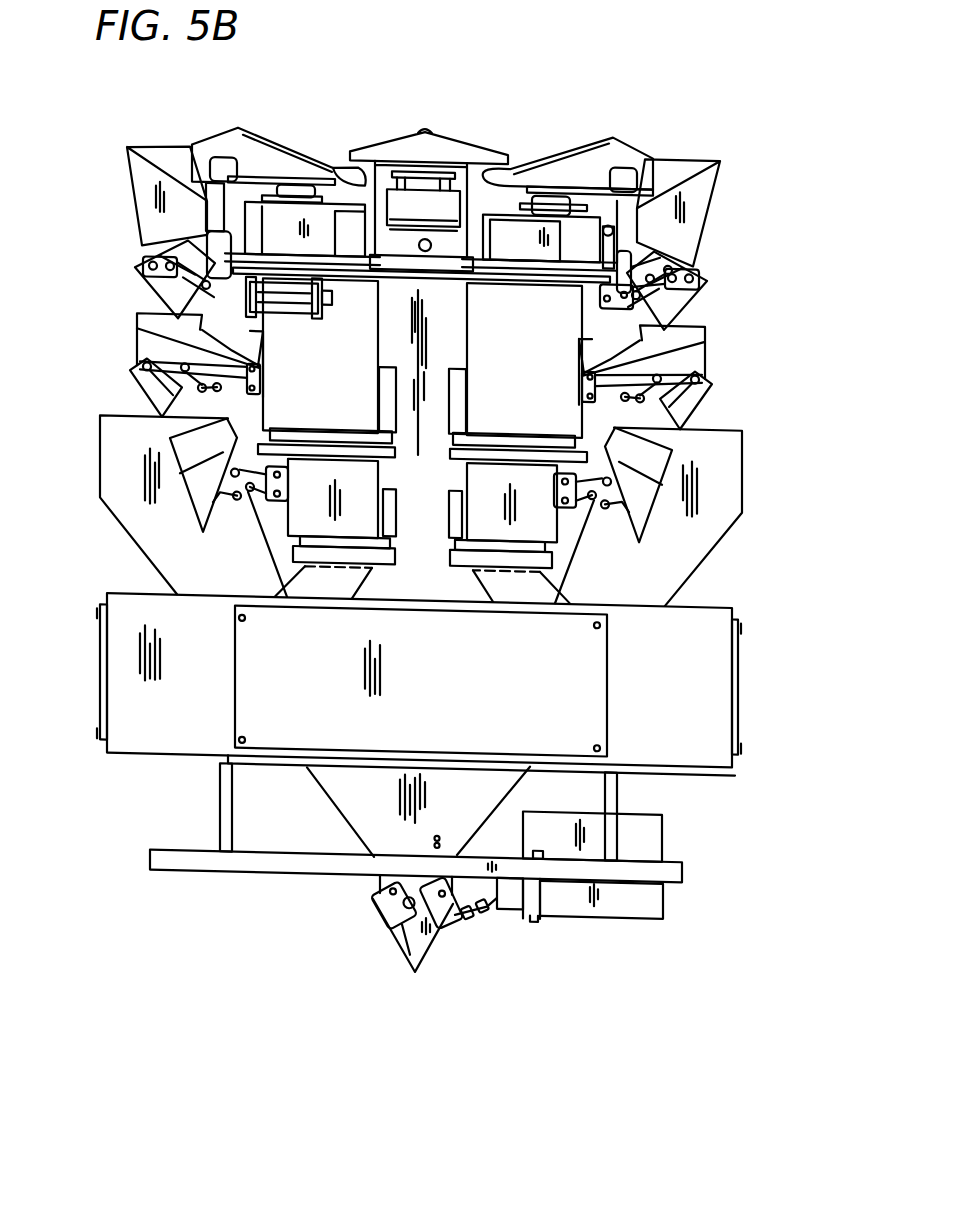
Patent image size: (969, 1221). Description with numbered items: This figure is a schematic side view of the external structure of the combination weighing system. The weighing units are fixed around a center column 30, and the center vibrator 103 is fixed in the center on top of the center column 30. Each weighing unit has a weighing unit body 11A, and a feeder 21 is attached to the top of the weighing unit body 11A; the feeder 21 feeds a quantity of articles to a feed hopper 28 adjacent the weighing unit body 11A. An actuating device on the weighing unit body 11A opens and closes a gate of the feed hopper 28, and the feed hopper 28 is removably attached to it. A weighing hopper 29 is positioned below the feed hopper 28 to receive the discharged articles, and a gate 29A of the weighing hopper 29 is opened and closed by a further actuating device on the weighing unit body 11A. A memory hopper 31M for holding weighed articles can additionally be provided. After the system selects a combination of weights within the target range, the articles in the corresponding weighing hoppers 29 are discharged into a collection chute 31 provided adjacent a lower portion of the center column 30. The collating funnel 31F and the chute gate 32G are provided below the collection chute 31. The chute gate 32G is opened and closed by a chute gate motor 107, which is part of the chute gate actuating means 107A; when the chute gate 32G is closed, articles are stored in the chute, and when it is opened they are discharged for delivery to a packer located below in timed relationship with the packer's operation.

The center vibrator 103 is at (500, 126).
The feeder 21 is at (210, 138).
The feed hopper 28 is at (128, 192).
The center column 30 is at (540, 219).
The weighing unit body 11A is at (170, 326).
The weighing hopper 29 is at (165, 344).
The gate of the weighing hopper 29A is at (150, 386).
The collection chute 31 is at (742, 504).
The memory hopper 31M is at (230, 468).
The collating funnel 31F is at (388, 828).
The chute gate actuating means 107A is at (650, 834).
The chute gate motor 107 is at (507, 896).
The chute gate 32G is at (438, 950).